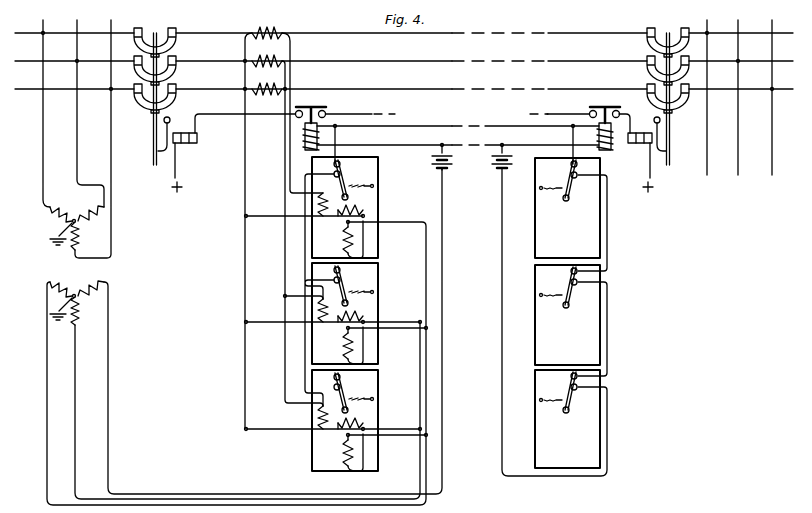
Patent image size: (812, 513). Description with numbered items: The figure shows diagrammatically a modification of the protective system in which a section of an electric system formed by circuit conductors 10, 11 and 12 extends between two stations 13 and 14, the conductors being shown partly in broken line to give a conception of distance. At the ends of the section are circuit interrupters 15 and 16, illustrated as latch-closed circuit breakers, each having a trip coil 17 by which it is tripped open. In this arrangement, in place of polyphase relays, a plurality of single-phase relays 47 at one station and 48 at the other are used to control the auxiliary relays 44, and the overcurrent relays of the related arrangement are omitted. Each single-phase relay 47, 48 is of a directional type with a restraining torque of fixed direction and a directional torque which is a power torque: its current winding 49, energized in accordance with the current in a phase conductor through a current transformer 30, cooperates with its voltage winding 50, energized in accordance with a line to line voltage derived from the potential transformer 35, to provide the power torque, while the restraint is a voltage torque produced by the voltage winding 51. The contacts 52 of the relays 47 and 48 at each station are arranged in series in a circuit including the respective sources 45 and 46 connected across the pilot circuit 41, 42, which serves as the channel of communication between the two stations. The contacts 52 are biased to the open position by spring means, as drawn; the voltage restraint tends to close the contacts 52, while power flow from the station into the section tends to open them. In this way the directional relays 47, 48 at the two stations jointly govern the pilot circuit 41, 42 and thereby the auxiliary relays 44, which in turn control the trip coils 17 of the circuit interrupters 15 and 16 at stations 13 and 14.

The circuit conductor 10 is at (375, 91).
The circuit conductor 11 is at (363, 64).
The circuit conductor 12 is at (363, 36).
The station 13 is at (65, 141).
The station 14 is at (743, 193).
The circuit interrupter 15 is at (170, 99).
The circuit interrupter 16 is at (655, 99).
The trip coil 17 is at (180, 145).
The current transformer 30 is at (268, 41).
The potential transformer 35 is at (68, 271).
The pilot circuit conductor 41 is at (551, 144).
The pilot circuit conductor 42 is at (509, 118).
The auxiliary relay 44 is at (308, 150).
The source 45 is at (434, 164).
The source 46 is at (495, 164).
The single-phase relay 47 is at (379, 197).
The single-phase relay 48 is at (567, 313).
The current winding 49 is at (330, 305).
The voltage winding 50 is at (351, 212).
The voltage winding 51 is at (342, 238).
The contacts 52 is at (334, 166).